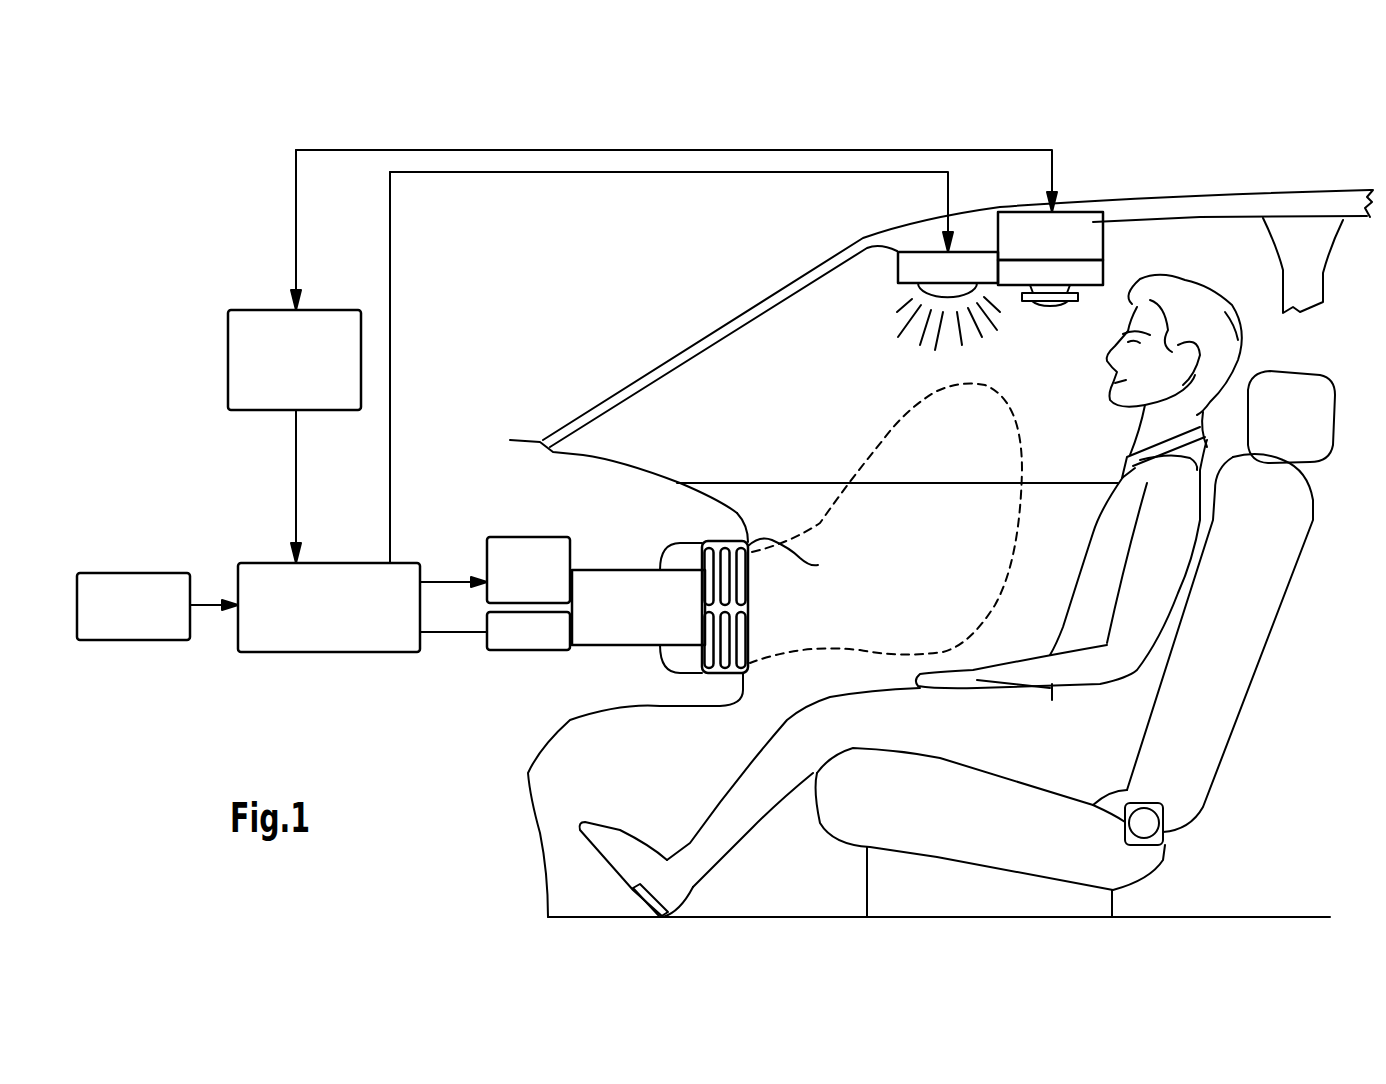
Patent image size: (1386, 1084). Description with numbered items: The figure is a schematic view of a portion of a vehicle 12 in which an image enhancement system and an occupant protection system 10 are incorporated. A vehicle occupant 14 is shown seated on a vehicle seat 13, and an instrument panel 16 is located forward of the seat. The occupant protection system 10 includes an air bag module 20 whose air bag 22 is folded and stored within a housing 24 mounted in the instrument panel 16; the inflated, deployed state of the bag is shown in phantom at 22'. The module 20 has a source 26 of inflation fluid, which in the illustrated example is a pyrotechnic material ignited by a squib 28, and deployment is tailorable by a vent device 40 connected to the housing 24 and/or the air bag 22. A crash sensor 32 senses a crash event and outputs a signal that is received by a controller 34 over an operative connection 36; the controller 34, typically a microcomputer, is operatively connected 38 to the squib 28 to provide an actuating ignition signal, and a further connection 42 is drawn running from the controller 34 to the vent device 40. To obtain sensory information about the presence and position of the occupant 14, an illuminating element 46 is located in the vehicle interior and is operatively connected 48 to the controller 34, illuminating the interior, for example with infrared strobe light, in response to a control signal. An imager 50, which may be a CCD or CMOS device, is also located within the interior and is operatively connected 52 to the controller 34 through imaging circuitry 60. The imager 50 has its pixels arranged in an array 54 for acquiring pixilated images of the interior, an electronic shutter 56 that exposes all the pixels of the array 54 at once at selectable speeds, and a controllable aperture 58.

The occupant protection system 10 is at (850, 136).
The vehicle 12 is at (562, 117).
The vehicle seat 13 is at (1298, 600).
The vehicle occupant 14 is at (1220, 442).
The instrument panel 16 is at (632, 469).
The air bag module 20 is at (740, 518).
The air bag 22 is at (775, 619).
The air bag in deployed state 22' is at (886, 514).
The housing 24 is at (801, 557).
The source of inflation fluid 26 is at (632, 645).
The squib 28 is at (520, 652).
The crash sensor 32 is at (148, 573).
The controller 34 is at (272, 565).
The operative connection to crash sensor 36 is at (198, 600).
The operative connection to squib 38 is at (448, 634).
The vent device 40 is at (498, 538).
The lead to vent 42 is at (445, 580).
The illuminating element 46 is at (898, 268).
The operative connection to illuminating element 48 is at (392, 470).
The imager 50 is at (1083, 194).
The operative connection to imager 52 is at (296, 222).
The array 54 is at (1090, 261).
The shutter 56 is at (1095, 285).
The controllable aperture 58 is at (1055, 308).
The imaging circuitry 60 is at (214, 355).